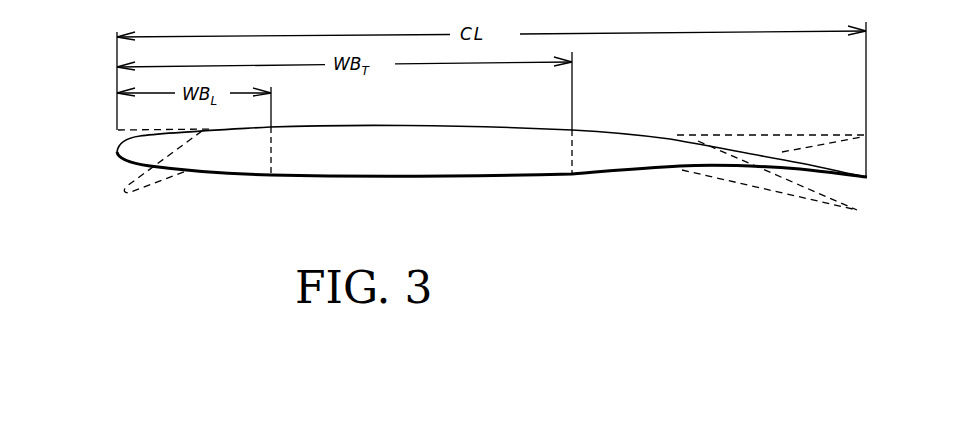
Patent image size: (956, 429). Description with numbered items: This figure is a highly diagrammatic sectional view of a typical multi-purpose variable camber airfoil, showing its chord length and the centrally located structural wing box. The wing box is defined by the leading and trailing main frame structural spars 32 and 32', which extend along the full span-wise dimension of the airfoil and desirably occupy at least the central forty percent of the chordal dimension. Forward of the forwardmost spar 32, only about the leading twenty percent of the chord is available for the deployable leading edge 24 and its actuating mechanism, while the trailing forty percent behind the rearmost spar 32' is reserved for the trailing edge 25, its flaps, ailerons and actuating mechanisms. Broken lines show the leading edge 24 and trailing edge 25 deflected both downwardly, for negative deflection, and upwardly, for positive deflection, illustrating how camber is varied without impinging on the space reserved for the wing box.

The leading edge 24 is at (118, 152).
The trailing edge 25 is at (868, 177).
The leading main frame structural spar 32 is at (295, 176).
The trailing main frame structural spar 32' is at (596, 172).